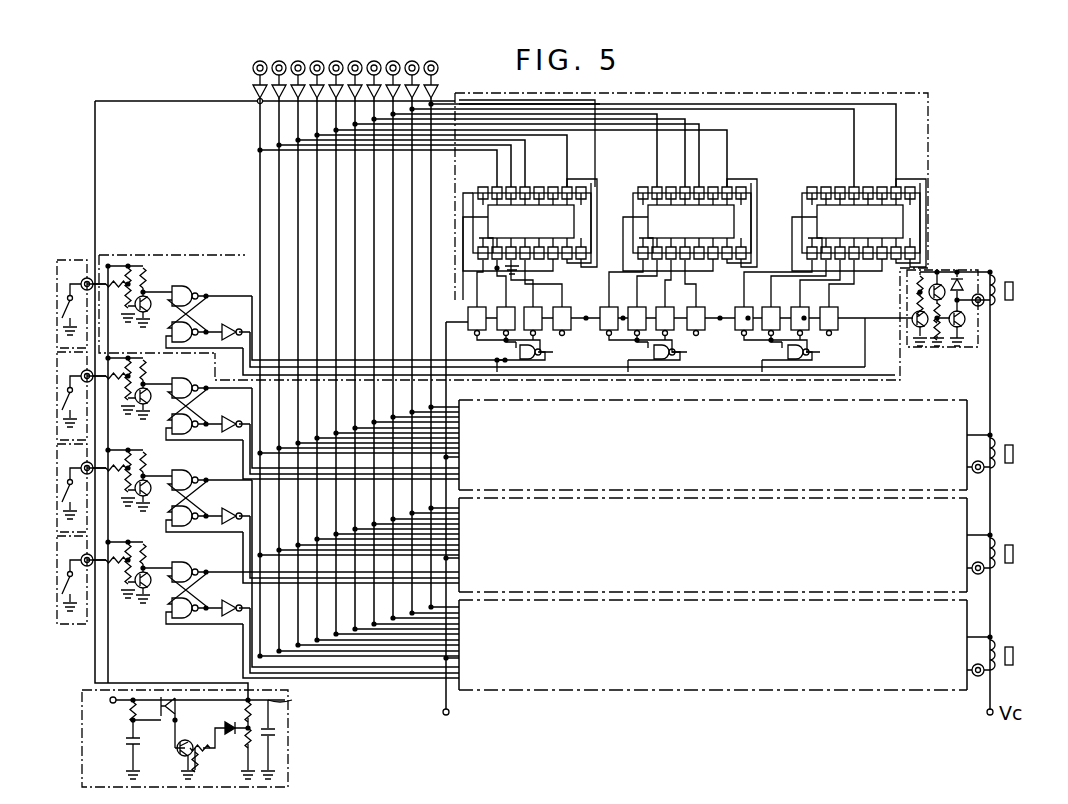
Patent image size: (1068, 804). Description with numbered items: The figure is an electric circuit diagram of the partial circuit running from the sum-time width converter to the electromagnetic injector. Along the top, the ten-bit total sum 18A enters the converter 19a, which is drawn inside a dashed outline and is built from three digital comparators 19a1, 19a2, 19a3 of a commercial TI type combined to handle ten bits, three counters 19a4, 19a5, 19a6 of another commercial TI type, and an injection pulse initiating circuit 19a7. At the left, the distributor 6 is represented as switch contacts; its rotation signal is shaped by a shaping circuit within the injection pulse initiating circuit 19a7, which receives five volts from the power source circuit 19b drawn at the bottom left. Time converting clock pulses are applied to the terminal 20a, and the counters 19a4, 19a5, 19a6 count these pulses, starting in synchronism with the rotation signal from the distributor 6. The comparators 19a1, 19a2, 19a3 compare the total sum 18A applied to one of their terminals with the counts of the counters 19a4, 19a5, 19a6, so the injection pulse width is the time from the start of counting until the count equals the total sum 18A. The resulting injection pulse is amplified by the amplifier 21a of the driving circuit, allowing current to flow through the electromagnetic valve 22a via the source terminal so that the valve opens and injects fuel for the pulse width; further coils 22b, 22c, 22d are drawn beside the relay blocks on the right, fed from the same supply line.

The total sum 18A is at (437, 58).
The converter 19a is at (712, 98).
The digital comparator 19a1 is at (470, 208).
The digital comparator 19a2 is at (636, 200).
The digital comparator 19a3 is at (810, 200).
The counter 19a4 is at (470, 345).
The counter 19a5 is at (597, 345).
The counter 19a6 is at (730, 345).
The injection pulse initiating circuit 19a7 is at (166, 258).
The distributor 6 is at (60, 258).
The terminal 20a is at (449, 533).
The amplifier 21a is at (926, 278).
The electromagnetic valve 22a is at (1000, 280).
The relay coil 22b is at (1004, 440).
The relay coil 22c is at (1004, 541).
The relay coil 22d is at (1004, 642).
The power source circuit 19b is at (288, 752).